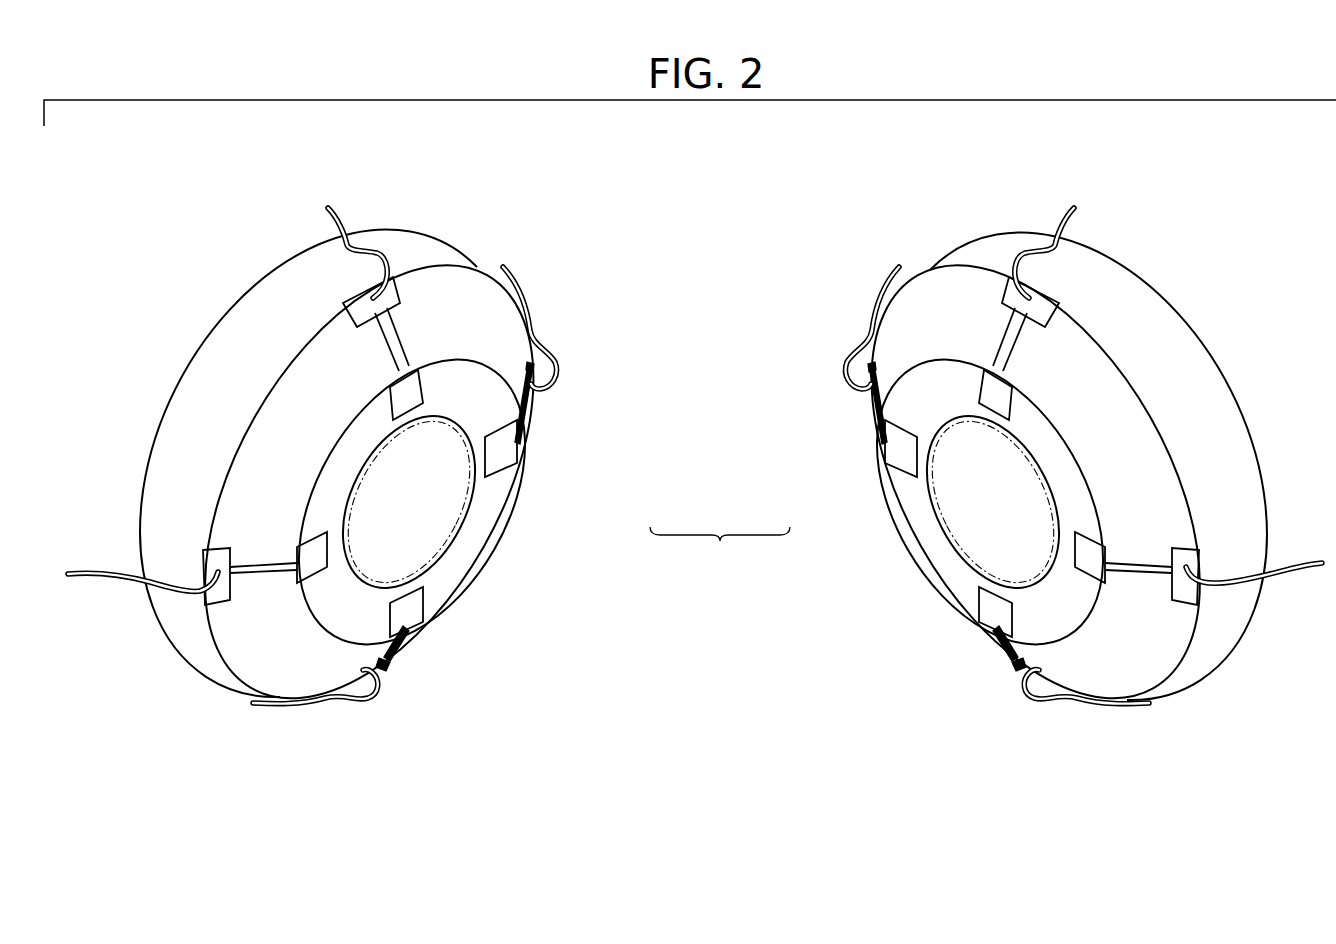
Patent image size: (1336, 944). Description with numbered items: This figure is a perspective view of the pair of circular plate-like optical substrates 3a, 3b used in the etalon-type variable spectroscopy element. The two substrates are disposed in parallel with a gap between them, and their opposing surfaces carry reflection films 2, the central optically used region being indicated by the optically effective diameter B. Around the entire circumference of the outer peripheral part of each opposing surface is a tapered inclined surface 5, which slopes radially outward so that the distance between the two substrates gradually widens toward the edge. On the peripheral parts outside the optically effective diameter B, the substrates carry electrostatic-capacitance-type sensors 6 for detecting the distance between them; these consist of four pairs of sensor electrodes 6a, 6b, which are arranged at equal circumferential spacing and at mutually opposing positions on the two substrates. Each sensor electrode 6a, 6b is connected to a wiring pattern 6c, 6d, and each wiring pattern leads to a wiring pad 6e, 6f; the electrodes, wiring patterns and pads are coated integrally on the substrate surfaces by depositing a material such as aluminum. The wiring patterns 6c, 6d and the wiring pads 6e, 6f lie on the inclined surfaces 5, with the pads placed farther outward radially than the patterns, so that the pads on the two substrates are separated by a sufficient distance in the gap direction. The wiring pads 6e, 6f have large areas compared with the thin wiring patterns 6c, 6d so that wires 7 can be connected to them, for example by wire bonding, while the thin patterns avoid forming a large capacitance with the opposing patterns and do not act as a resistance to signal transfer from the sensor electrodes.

The reflection film 2 is at (460, 528).
The optical substrate 3a is at (205, 345).
The optical substrate 3b is at (1163, 297).
The inclined surface 5 is at (460, 287).
The sensor 6 is at (720, 551).
The sensor electrode 6a is at (425, 383).
The sensor electrode 6b is at (1013, 403).
The wiring pattern 6c is at (400, 338).
The wiring pattern 6d is at (877, 403).
The wiring pad 6e is at (393, 290).
The wiring pad 6f is at (1047, 300).
The wire 7 is at (341, 225).
The optically effective diameter B is at (472, 498).